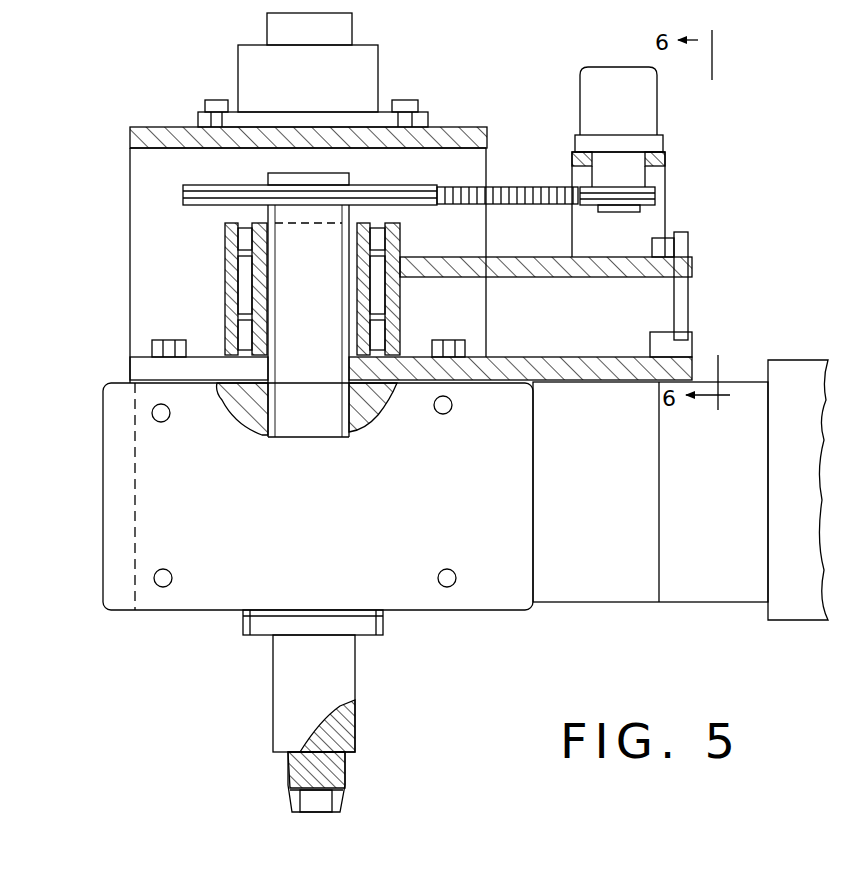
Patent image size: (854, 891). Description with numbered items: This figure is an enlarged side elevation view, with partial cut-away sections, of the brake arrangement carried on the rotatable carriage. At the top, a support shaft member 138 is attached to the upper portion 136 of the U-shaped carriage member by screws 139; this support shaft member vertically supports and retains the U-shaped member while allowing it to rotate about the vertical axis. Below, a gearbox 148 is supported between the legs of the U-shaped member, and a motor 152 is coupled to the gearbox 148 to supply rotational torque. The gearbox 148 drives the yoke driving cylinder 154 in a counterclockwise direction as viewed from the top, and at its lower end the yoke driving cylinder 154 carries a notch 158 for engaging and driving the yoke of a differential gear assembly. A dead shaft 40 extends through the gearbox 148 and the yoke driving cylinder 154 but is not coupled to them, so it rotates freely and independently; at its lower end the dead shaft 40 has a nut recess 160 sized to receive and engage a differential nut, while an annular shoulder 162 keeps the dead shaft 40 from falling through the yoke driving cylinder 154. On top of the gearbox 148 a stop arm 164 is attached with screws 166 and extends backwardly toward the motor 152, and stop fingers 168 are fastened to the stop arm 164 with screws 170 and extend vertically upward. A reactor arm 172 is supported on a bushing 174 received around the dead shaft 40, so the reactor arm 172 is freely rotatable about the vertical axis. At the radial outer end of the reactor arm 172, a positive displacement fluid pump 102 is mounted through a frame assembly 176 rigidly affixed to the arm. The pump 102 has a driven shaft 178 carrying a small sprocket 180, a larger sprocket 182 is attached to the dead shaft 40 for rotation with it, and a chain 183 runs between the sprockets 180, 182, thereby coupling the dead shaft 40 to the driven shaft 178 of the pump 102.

The dead shaft 40 is at (268, 176).
The positive displacement fluid pump 102 is at (642, 90).
The upper portion of U-shaped member 136 is at (140, 133).
The support shaft member 138 is at (370, 65).
The screws 139 is at (213, 100).
The gearbox 148 is at (125, 498).
The motor 152 is at (801, 600).
The yoke driving cylinder 154 is at (290, 678).
The notch 158 is at (358, 745).
The nut recess 160 is at (315, 808).
The annular shoulder 162 is at (270, 388).
The stop arm 164 is at (140, 372).
The screws 166 is at (167, 340).
The stop fingers 168 is at (688, 308).
The screws 170 is at (668, 337).
The reactor arm 172 is at (540, 270).
The bushing 174 is at (228, 255).
The frame assembly 176 is at (593, 225).
The driven shaft 178 is at (640, 175).
The small sprocket 180 is at (655, 193).
The larger sprocket 182 is at (196, 205).
The chain 183 is at (518, 185).